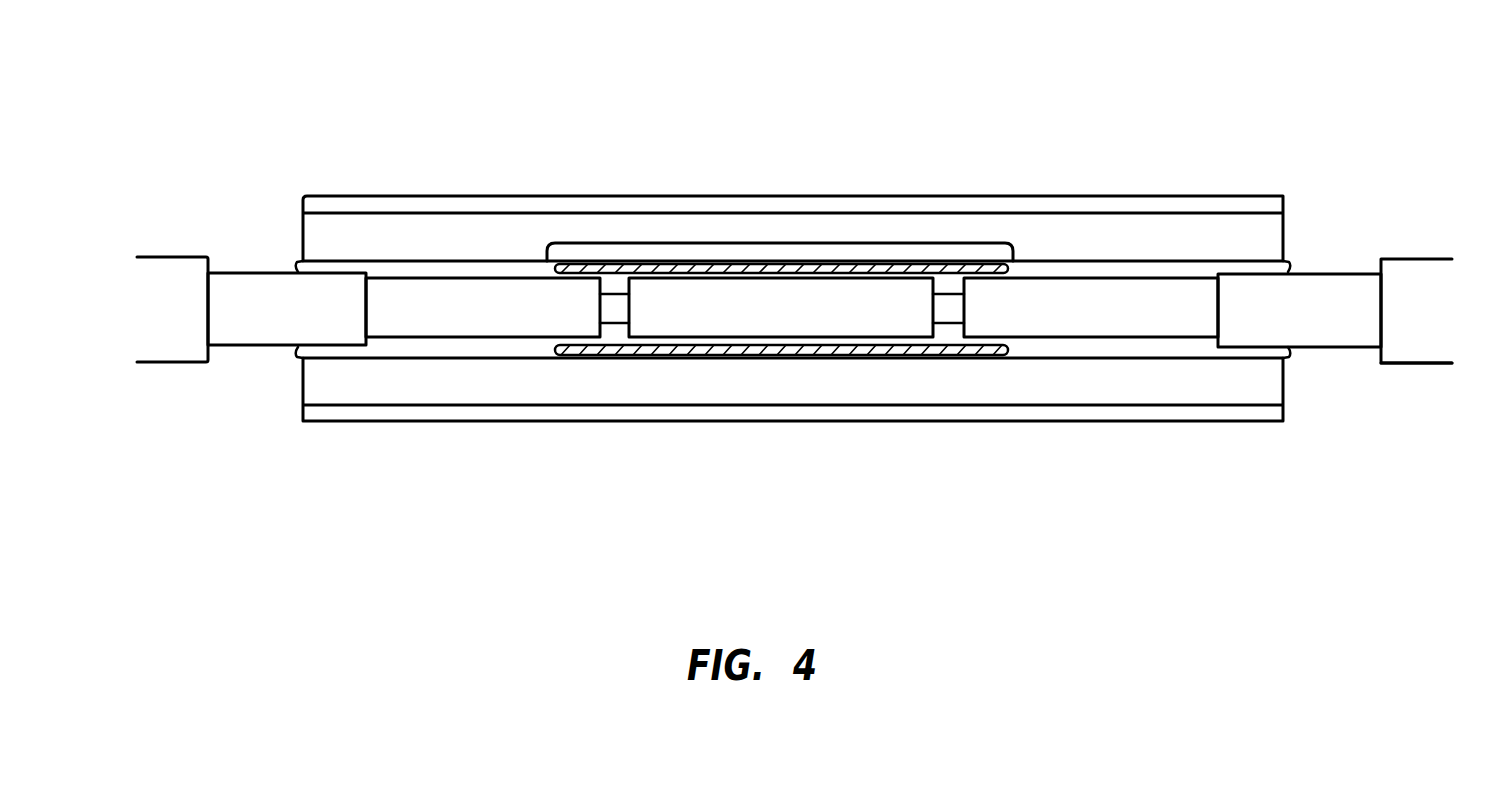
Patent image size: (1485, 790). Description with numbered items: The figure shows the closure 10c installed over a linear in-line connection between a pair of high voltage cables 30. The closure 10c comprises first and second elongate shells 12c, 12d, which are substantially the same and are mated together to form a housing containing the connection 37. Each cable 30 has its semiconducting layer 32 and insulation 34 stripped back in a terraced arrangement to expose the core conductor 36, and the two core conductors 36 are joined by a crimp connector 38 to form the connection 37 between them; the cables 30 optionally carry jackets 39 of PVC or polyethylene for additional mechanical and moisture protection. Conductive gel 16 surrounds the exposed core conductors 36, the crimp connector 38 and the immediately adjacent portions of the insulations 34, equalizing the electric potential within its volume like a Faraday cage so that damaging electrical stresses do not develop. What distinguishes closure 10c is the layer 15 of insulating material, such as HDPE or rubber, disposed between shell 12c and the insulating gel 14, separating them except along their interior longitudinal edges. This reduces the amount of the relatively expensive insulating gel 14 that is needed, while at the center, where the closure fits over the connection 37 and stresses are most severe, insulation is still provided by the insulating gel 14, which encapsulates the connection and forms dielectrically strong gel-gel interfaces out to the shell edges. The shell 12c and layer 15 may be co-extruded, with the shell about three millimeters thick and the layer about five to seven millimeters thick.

The closure 10c is at (306, 131).
The first elongate shell 12c is at (1042, 415).
The second elongate shell 12d is at (467, 203).
The insulating gel 14 is at (410, 348).
The layer of insulating material 15 is at (542, 390).
The conductive gel 16 is at (663, 350).
The high voltage cable 30 is at (1442, 295).
The semiconducting layer 32 is at (1310, 342).
The insulation 34 is at (1108, 305).
The core conductor 36 is at (948, 313).
The connection 37 is at (785, 243).
The crimp connector 38 is at (787, 333).
The jacket 39 is at (1417, 348).